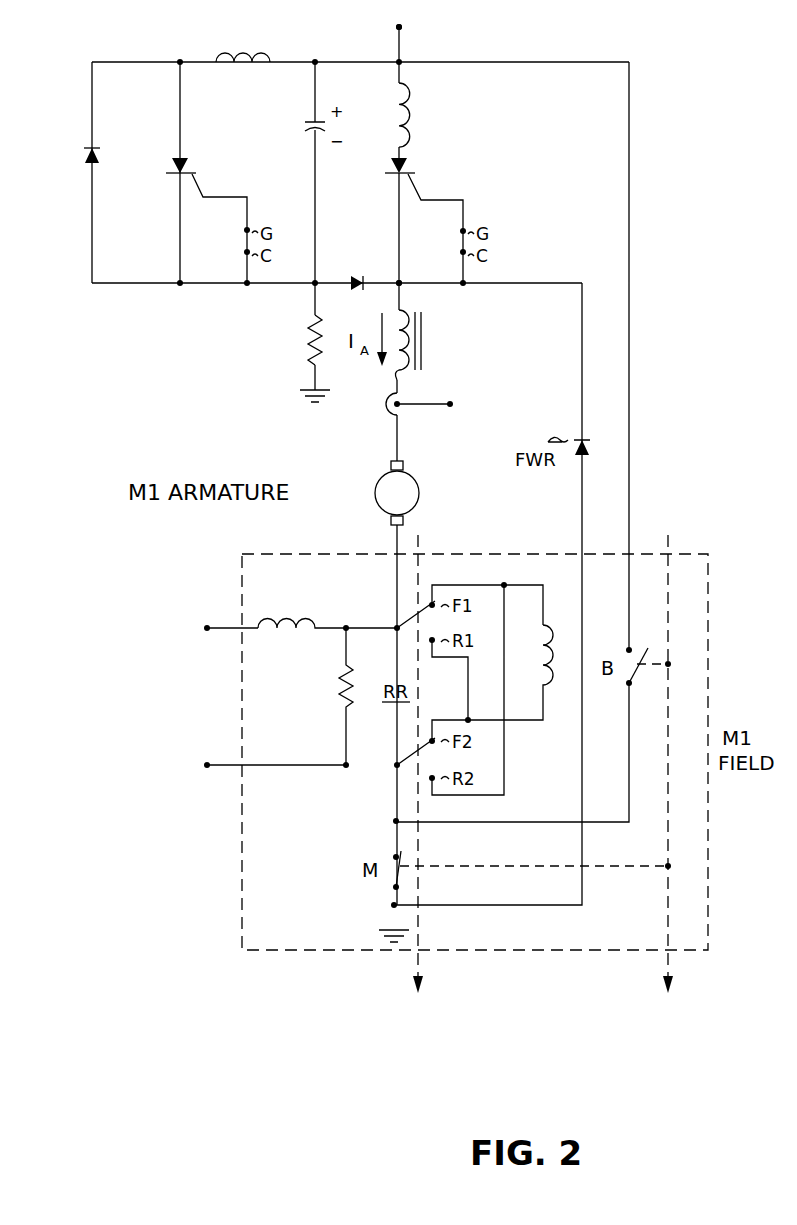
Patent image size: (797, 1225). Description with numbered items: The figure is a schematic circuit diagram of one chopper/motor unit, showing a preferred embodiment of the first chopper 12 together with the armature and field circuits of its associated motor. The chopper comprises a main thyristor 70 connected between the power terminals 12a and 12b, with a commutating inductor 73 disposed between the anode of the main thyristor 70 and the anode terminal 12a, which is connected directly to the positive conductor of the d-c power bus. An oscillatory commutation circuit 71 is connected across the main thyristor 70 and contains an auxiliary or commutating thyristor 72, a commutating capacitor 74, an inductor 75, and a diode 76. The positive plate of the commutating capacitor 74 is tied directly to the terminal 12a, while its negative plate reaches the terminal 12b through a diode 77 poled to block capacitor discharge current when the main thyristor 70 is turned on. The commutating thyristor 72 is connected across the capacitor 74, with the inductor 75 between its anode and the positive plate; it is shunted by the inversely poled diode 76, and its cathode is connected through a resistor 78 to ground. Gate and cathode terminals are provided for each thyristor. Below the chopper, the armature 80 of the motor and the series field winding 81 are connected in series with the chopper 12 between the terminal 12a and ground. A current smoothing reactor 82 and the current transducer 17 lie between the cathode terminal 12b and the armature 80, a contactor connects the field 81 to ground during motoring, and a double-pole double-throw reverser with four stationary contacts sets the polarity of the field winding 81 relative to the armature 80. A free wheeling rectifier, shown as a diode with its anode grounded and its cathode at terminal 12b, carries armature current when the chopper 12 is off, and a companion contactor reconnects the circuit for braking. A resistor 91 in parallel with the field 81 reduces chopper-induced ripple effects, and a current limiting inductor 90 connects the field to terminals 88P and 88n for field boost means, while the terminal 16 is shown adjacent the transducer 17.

The first chopper 12 is at (537, 162).
The anode terminal 12a is at (410, 28).
The cathode terminal 12b is at (404, 278).
The armature circuit terminal 16 is at (446, 412).
The current transducer 17 is at (382, 403).
The main thyristor 70 is at (408, 165).
The oscillatory commutation circuit 71 is at (276, 164).
The auxiliary or commutating thyristor 72 is at (192, 166).
The commutating inductor 73 is at (416, 113).
The commutating capacitor 74 is at (308, 113).
The inductor 75 is at (254, 47).
The diode 76 is at (86, 144).
The diode 77 is at (360, 274).
The resistor 78 is at (300, 345).
The armature 80 is at (420, 498).
The series field winding 81 is at (541, 666).
The current smoothing reactor 82 is at (428, 343).
The terminal 88P is at (207, 622).
The terminal 88n is at (208, 772).
The current limiting inductor 90 is at (309, 613).
The resistor 91 is at (336, 688).